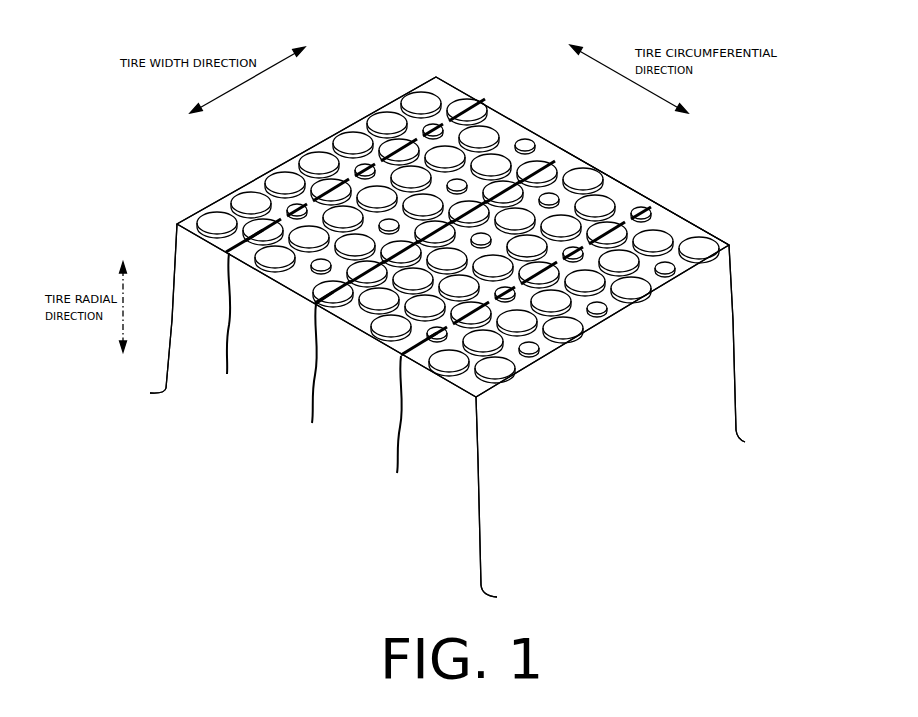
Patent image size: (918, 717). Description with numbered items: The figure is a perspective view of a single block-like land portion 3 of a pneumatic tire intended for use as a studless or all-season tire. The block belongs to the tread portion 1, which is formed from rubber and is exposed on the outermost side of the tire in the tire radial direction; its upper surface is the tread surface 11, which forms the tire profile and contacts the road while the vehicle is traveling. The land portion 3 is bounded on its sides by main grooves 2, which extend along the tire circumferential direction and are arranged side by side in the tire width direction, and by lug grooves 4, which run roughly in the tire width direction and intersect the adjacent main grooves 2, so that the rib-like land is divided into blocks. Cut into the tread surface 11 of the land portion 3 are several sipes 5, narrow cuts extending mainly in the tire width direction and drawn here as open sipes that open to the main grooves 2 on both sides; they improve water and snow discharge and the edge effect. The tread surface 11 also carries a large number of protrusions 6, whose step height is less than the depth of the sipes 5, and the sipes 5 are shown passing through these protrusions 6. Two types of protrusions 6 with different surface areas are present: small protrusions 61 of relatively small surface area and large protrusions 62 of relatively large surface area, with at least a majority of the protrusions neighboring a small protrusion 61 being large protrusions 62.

The tread portion 1 is at (433, 73).
The tread surface 11 is at (447, 94).
The main groove 2 is at (247, 451).
The land portion 3 is at (620, 194).
The lug groove 4 is at (159, 258).
The sipe 5 is at (231, 328).
The protrusion 6 is at (475, 237).
The small protrusion 61 is at (292, 203).
The large protrusion 62 is at (217, 216).